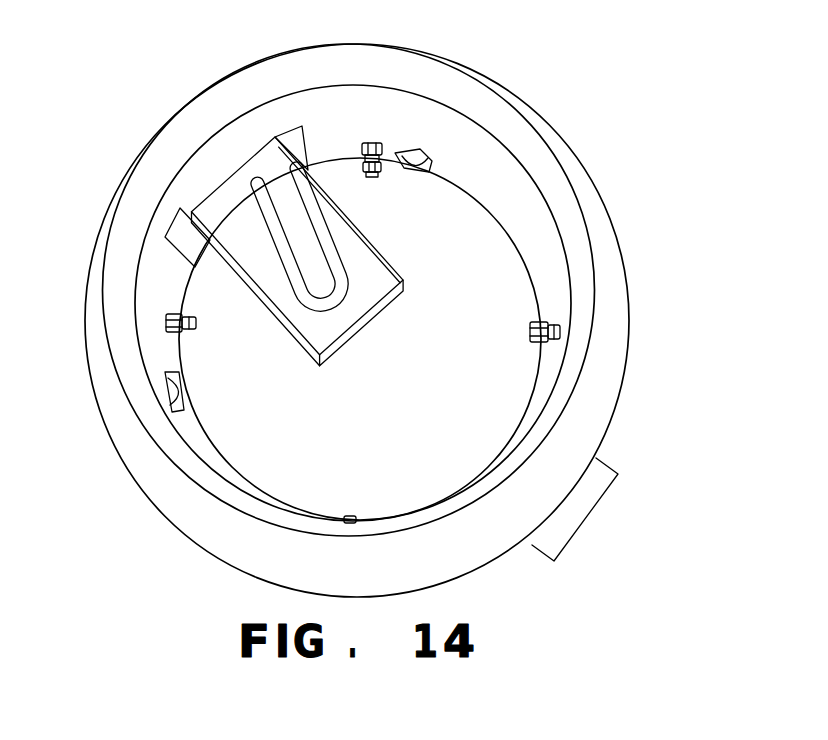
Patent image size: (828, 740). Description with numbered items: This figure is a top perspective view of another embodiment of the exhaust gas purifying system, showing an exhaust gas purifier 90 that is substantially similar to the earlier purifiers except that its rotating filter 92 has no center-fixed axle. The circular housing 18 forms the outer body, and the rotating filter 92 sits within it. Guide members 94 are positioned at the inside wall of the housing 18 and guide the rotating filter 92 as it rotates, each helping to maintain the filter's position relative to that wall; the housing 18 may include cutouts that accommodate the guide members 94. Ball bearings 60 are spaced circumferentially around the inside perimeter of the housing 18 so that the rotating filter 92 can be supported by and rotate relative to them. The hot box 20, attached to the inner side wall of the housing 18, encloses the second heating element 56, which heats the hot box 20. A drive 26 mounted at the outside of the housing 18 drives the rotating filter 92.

The housing 18 is at (197, 547).
The hot box 20 is at (362, 222).
The drive 26 is at (583, 528).
The second heating element 56 is at (297, 302).
The ball bearings 60 is at (372, 142).
The exhaust gas purifier 90 is at (607, 210).
The rotating filter 92 is at (500, 392).
The guide members 94 is at (408, 157).